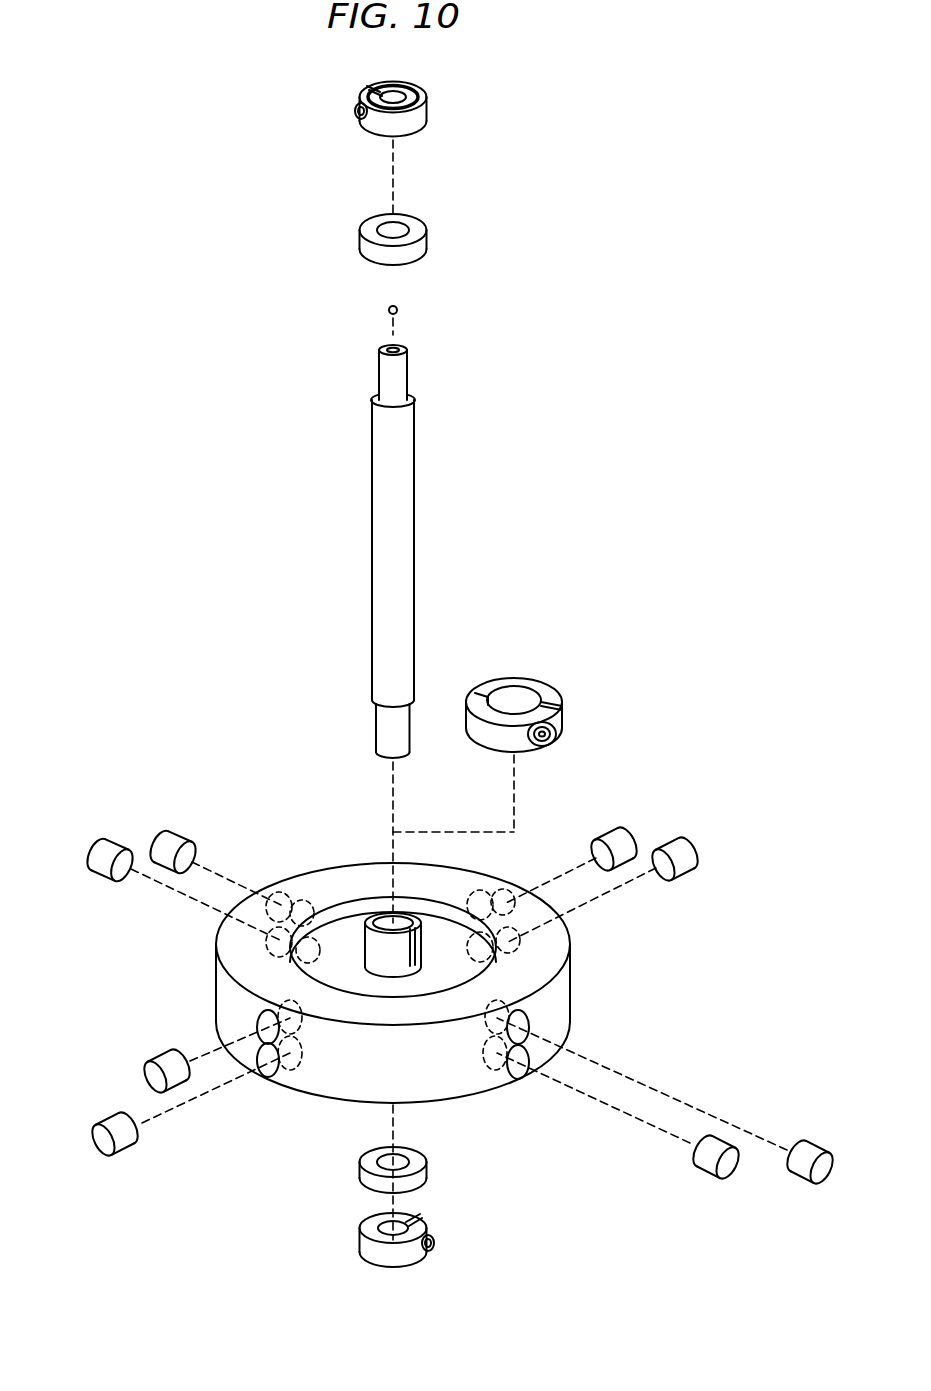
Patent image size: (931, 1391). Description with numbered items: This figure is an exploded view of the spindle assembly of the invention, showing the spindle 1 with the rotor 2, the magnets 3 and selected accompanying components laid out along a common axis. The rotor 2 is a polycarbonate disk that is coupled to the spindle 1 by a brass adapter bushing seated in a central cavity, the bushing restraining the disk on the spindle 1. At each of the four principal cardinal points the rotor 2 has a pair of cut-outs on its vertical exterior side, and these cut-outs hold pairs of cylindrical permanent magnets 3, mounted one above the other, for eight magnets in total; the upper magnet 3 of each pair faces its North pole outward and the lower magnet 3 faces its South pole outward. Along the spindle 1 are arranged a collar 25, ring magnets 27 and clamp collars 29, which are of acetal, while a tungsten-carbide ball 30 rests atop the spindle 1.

The spindle 1 is at (409, 368).
The rotor 2 is at (303, 1092).
The permanent magnets 3 is at (88, 845).
The collar 25 is at (563, 703).
The ring magnet 27 is at (428, 244).
The clamp collar 29 is at (428, 112).
The tungsten-carbide ball 30 is at (388, 309).